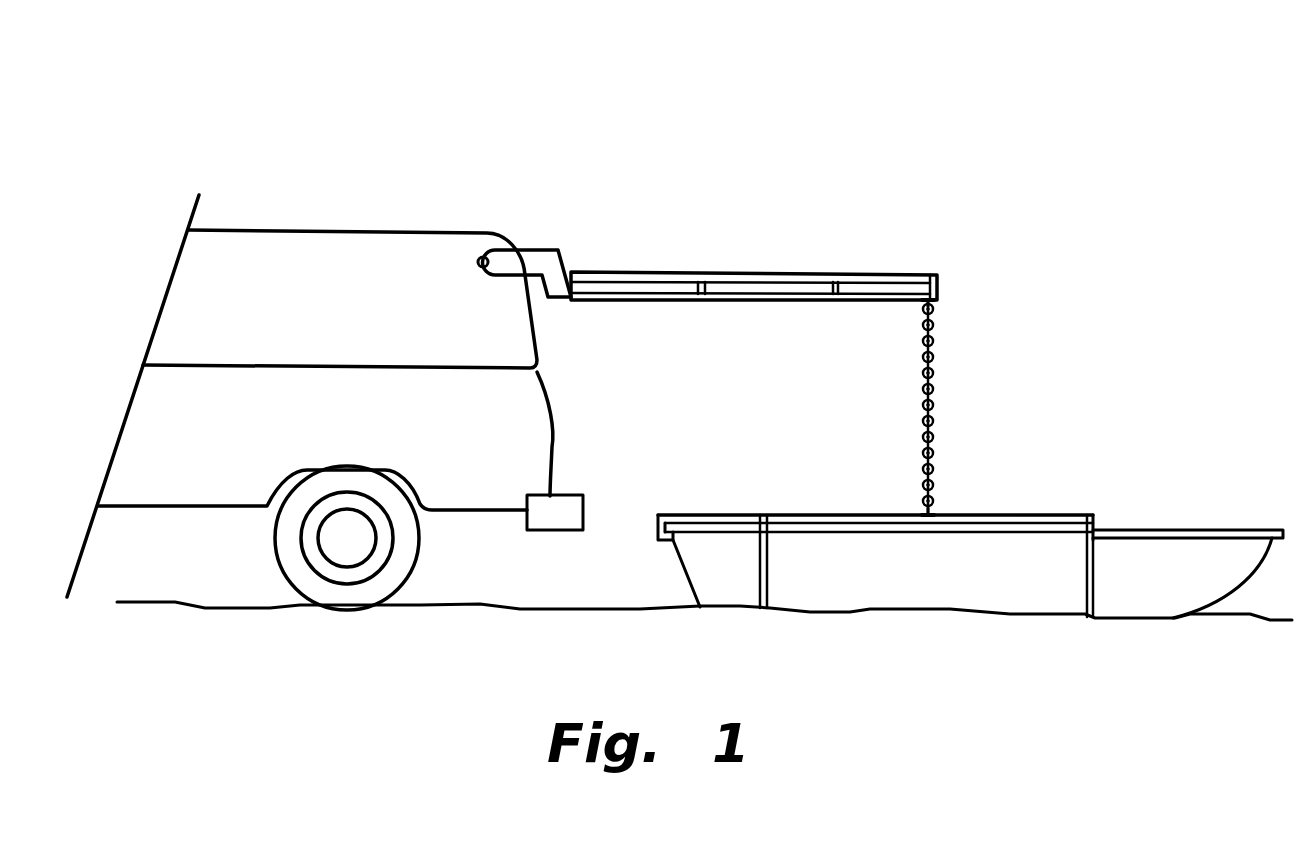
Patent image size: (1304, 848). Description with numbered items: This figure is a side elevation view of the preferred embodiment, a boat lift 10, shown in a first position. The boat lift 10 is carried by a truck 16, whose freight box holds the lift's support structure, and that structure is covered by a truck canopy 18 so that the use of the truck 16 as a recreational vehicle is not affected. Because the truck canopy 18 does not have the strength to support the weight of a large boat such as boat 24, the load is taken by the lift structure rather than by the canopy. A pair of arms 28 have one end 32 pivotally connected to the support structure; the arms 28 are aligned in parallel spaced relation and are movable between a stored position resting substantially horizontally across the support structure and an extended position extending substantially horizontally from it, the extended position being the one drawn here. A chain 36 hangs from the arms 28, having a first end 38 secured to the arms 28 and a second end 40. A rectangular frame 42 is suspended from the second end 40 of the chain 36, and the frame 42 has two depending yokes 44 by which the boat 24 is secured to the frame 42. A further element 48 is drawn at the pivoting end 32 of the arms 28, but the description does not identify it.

The boat lift 10 is at (780, 232).
The truck 16 is at (490, 480).
The truck canopy 18 is at (350, 243).
The boat 24 is at (1165, 590).
The arms 28 is at (847, 274).
The one end of arms 32 is at (550, 253).
The chain 36 is at (928, 403).
The first end of chains 38 is at (1024, 287).
The second end of chains 40 is at (929, 507).
The rectangular frame 42 is at (1062, 517).
The depending yokes 44 is at (770, 535).
The pivot pin 48 is at (488, 258).